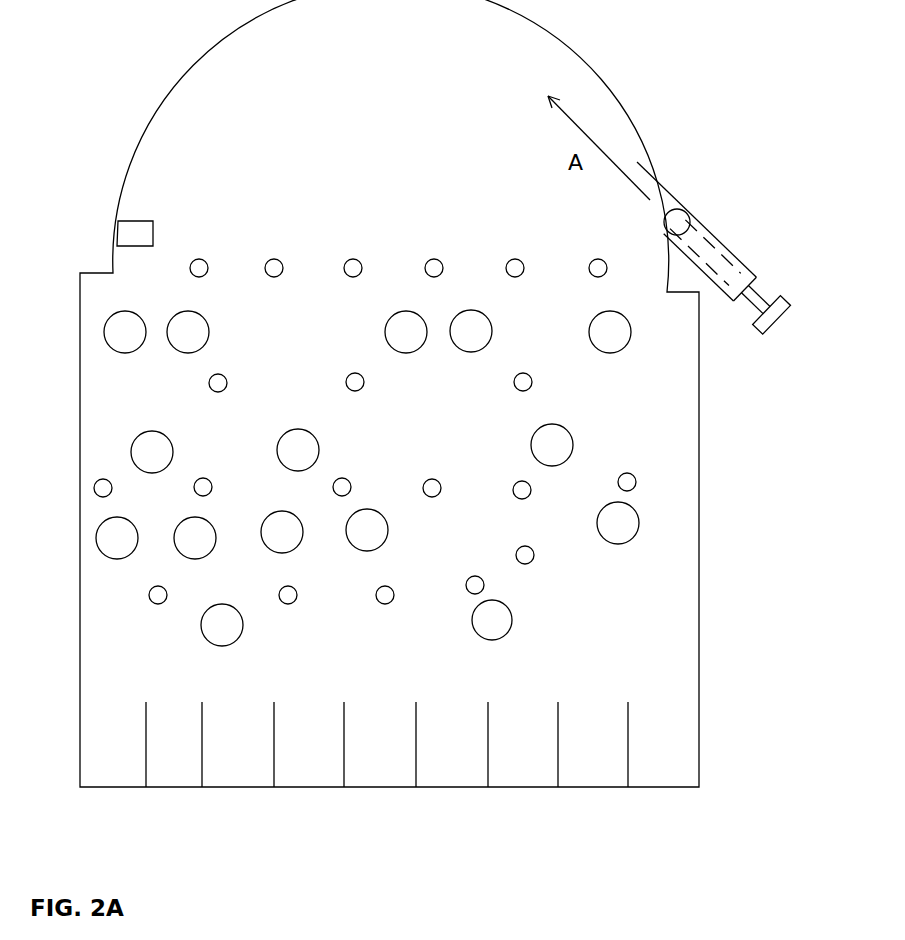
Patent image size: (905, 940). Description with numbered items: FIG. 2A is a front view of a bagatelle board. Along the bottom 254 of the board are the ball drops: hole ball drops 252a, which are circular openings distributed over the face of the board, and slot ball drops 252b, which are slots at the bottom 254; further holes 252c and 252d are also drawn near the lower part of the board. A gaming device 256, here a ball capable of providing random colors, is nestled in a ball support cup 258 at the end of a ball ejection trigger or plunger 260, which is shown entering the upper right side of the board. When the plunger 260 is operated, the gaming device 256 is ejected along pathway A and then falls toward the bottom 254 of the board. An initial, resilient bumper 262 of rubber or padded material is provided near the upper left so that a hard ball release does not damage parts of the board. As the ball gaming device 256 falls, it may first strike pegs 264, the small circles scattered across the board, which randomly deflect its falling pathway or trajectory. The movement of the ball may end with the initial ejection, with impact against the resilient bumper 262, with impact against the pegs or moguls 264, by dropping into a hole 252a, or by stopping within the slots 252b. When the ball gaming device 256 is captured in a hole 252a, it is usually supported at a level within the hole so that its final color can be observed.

The hole ball drops 252a is at (419, 349).
The slot ball drops 252b is at (385, 723).
The aperture 252c is at (513, 618).
The aperture 252d is at (205, 638).
The bottom 254 is at (535, 789).
The gaming device 256 is at (679, 218).
The ball support cup 258 is at (715, 238).
The ball ejection trigger or plunger 260 is at (728, 268).
The resilient bumper 262 is at (153, 231).
The pegs 264 is at (359, 261).